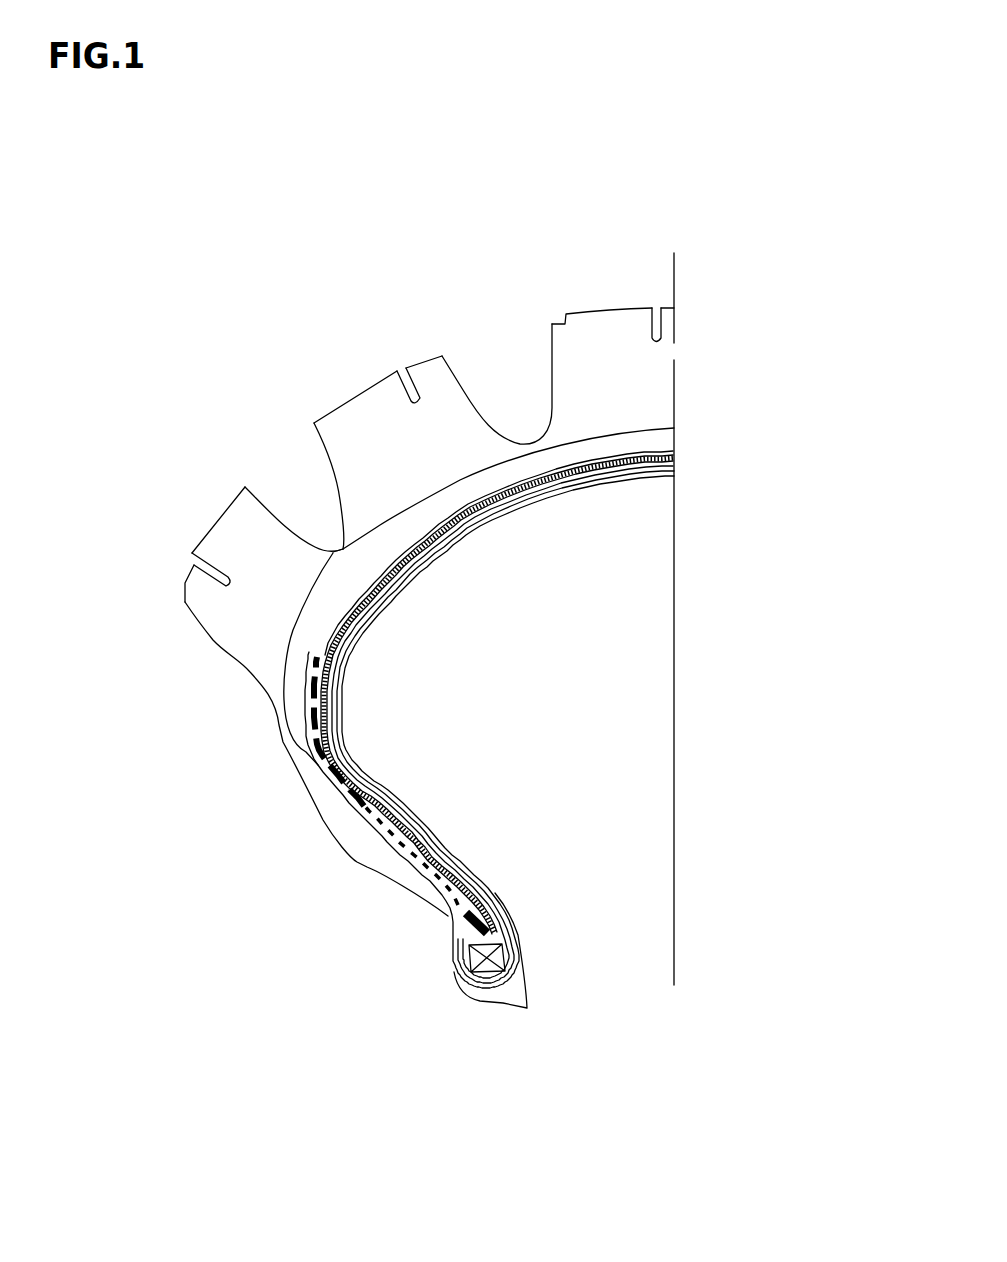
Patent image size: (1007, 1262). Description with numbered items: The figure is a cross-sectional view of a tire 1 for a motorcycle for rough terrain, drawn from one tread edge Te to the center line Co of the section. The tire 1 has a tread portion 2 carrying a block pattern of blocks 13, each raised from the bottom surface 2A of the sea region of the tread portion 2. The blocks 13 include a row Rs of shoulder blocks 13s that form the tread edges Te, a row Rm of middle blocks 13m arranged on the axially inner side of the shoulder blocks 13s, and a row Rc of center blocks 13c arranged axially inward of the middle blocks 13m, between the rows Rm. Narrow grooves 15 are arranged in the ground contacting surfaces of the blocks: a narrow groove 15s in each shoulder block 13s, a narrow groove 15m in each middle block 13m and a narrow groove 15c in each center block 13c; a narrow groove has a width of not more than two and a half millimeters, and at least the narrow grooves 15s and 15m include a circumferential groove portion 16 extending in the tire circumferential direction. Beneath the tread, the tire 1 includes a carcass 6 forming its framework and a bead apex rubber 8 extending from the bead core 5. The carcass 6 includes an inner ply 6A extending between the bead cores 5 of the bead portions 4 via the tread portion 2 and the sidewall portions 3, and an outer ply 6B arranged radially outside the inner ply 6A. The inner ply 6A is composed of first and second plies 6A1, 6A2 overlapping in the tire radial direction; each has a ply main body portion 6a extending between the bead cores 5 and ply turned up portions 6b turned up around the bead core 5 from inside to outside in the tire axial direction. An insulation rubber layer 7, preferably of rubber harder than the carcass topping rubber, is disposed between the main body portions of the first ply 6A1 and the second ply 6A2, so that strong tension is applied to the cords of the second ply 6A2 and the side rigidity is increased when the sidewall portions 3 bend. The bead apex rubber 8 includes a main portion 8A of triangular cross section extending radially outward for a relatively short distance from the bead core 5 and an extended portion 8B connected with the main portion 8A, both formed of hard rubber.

The tire 1 is at (275, 292).
The tread portion 2 is at (413, 470).
The bottom surface of sea region 2A is at (415, 503).
The sidewall portion 3 is at (320, 845).
The bead portion 4 is at (486, 936).
The bead core 5 is at (487, 968).
The carcass 6 is at (583, 711).
The inner ply 6A is at (570, 694).
The first ply 6A1 is at (577, 482).
The second ply 6A2 is at (603, 467).
The outer ply 6B is at (637, 456).
The ply main body portion 6a is at (376, 808).
The ply turned up portion 6b is at (395, 857).
The insulation rubber layer 7 is at (347, 764).
The bead apex rubber 8 is at (485, 861).
The main portion 8A is at (470, 920).
The extended portion 8B is at (393, 832).
The block 13 is at (368, 388).
The center block 13c is at (572, 315).
The middle block 13m is at (342, 393).
The shoulder block 13s is at (215, 520).
The narrow groove 15 is at (413, 403).
The narrow groove 15c is at (665, 322).
The narrow groove 15m is at (422, 368).
The narrow groove 15s is at (215, 562).
The circumferential groove portion 16 is at (252, 403).
The row of center blocks Rc is at (625, 300).
The row of middle blocks Rm is at (355, 365).
The row of shoulder blocks Rs is at (225, 490).
The tire equator Co is at (673, 605).
The tread edge Te is at (178, 595).